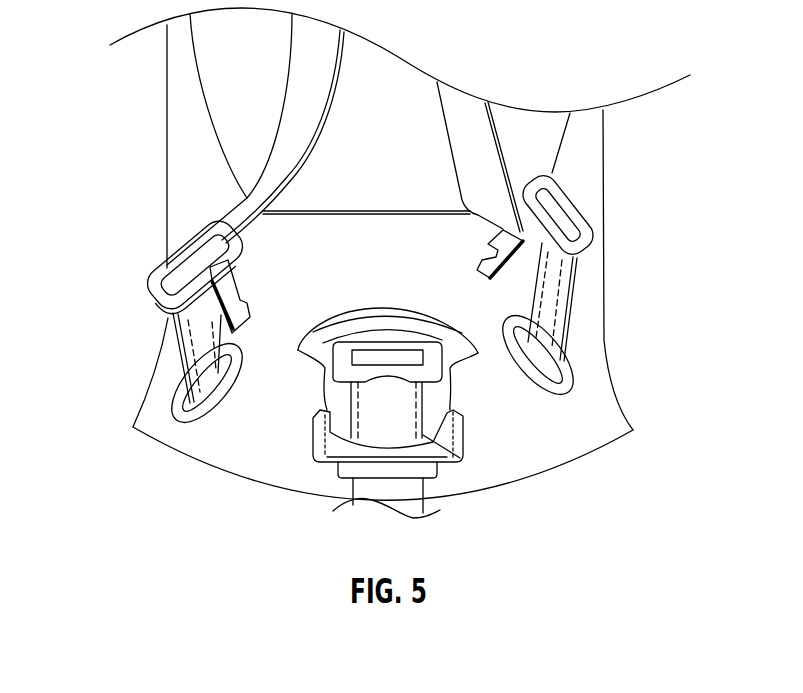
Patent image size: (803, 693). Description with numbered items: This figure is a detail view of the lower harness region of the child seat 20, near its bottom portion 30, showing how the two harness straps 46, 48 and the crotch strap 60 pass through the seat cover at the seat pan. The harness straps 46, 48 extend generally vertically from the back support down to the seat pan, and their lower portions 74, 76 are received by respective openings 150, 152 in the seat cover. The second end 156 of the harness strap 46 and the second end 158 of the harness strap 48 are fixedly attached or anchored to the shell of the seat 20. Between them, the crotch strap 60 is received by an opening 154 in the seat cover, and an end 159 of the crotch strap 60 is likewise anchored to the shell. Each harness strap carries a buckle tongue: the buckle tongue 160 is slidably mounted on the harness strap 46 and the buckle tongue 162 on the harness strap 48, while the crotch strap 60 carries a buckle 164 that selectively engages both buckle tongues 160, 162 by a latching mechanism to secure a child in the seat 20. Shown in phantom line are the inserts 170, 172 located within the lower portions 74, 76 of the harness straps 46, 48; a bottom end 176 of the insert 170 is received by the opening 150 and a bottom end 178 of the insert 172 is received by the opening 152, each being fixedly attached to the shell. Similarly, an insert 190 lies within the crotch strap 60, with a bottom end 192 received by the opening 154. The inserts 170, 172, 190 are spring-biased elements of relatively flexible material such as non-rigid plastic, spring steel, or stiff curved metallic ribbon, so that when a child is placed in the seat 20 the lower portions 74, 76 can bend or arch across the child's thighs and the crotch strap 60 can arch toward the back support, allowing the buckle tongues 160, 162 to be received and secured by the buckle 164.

The seat 20 is at (557, 512).
The bottom portion 30 is at (387, 255).
The harness strap 46 is at (327, 67).
The harness strap 48 is at (461, 143).
The crotch strap 60 is at (461, 462).
The lower portion 74 is at (232, 270).
The lower portion 76 is at (558, 268).
The opening 150 is at (240, 350).
The opening 152 is at (634, 430).
The opening 154 is at (317, 463).
The second end 156 is at (203, 372).
The second end 158 is at (565, 348).
The end 159 is at (370, 433).
The buckle tongue 160 is at (237, 318).
The buckle tongue 162 is at (505, 234).
The buckle 164 is at (357, 355).
The insert 170 is at (247, 298).
The insert 172 is at (477, 263).
The bottom end 176 is at (222, 405).
The bottom end 178 is at (521, 373).
The insert 190 is at (468, 437).
The bottom end 192 is at (441, 480).